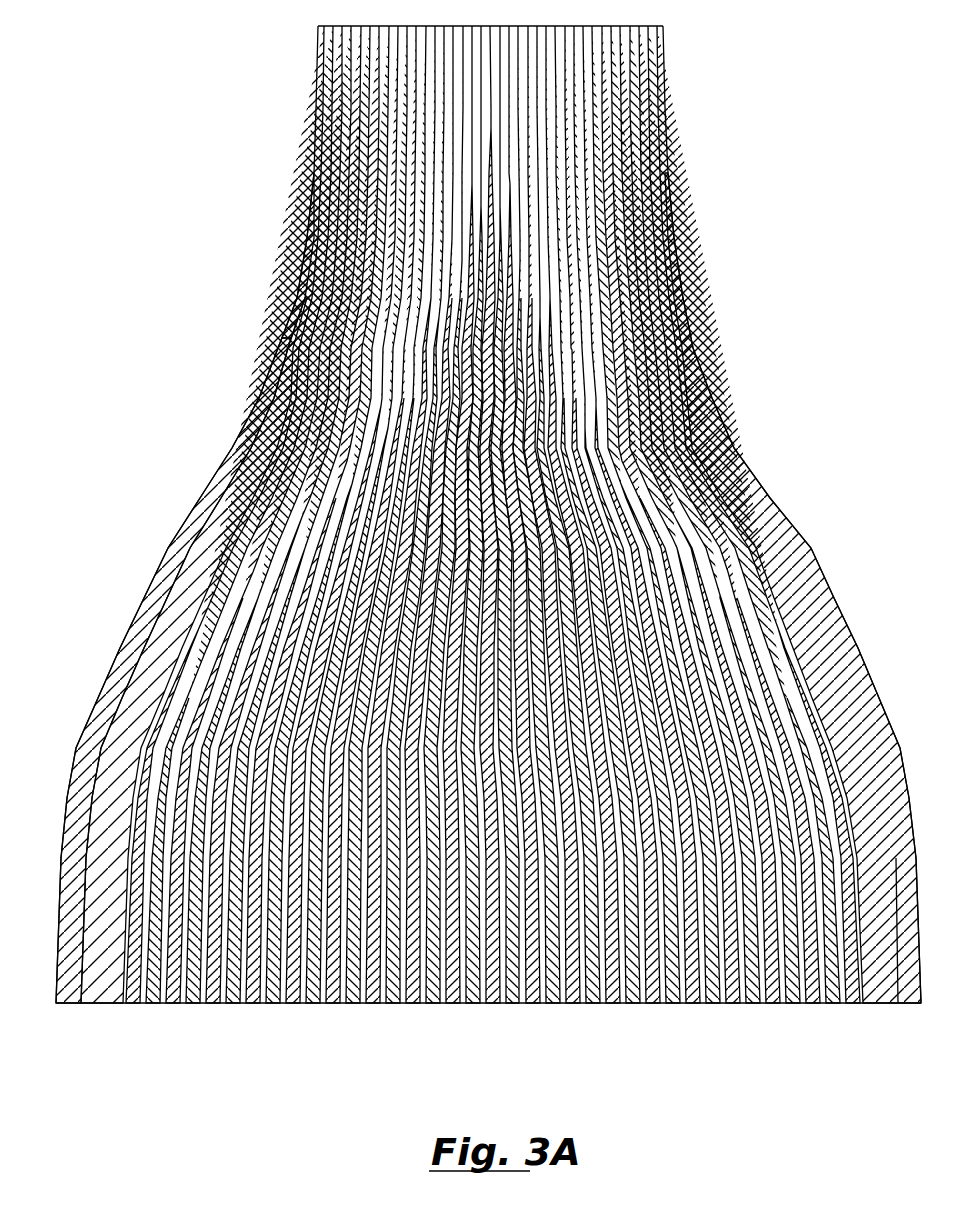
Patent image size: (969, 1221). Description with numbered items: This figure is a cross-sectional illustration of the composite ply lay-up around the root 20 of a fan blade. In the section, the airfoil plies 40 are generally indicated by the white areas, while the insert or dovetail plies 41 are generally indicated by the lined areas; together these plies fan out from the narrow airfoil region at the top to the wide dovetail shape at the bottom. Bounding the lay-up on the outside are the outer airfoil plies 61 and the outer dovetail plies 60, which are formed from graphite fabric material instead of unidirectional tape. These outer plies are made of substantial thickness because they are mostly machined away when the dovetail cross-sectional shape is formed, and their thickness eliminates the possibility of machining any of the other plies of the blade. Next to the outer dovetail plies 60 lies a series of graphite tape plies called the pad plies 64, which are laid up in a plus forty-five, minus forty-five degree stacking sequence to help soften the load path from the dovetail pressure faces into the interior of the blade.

The root 20 is at (410, 1004).
The airfoil plies 40 is at (551, 998).
The insert or dovetail plies 41 is at (660, 998).
The outer dovetail plies 60 is at (62, 998).
The outer airfoil plies 61 is at (306, 150).
The pad plies 64 is at (92, 998).